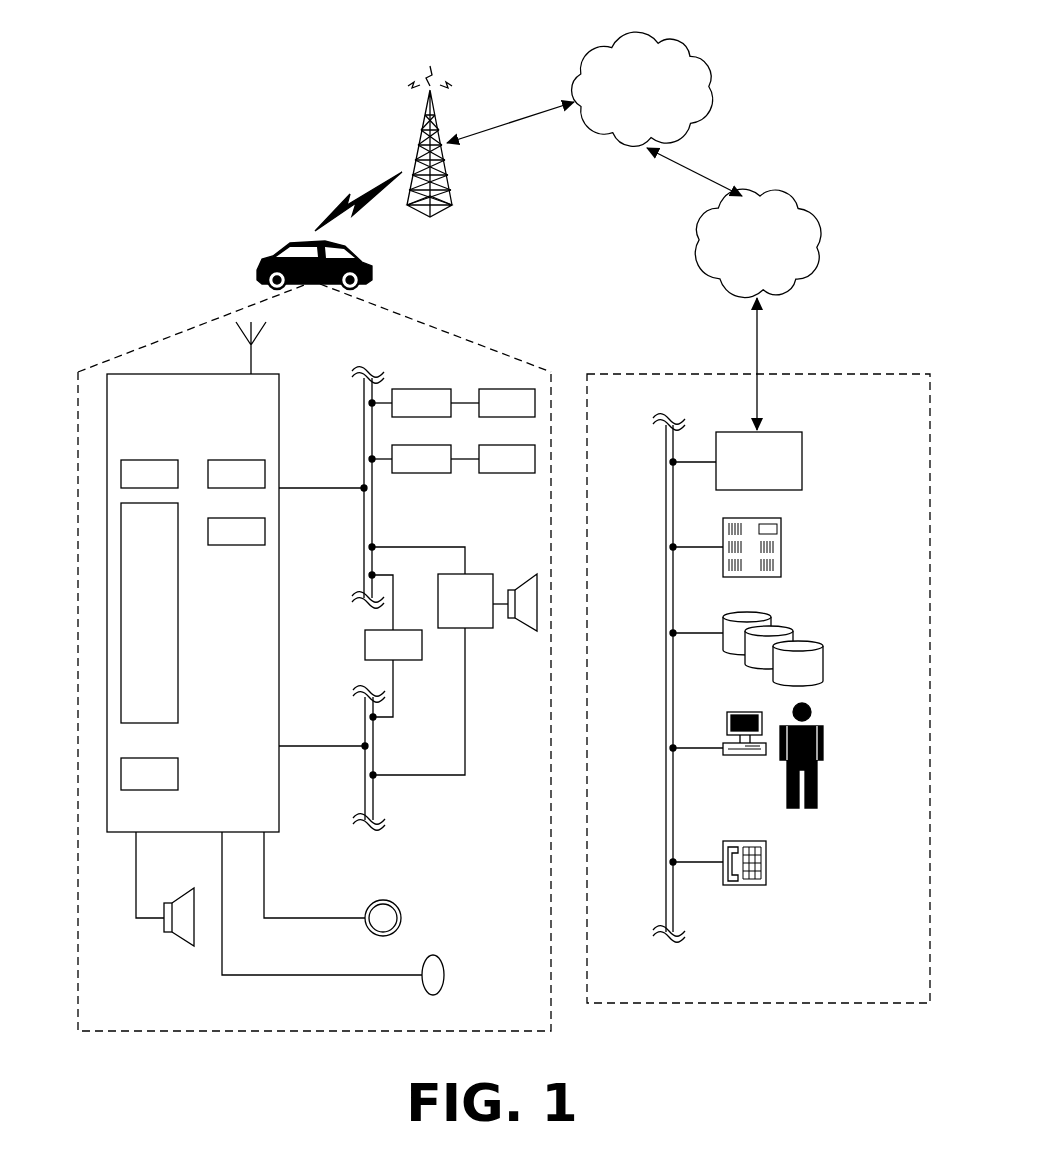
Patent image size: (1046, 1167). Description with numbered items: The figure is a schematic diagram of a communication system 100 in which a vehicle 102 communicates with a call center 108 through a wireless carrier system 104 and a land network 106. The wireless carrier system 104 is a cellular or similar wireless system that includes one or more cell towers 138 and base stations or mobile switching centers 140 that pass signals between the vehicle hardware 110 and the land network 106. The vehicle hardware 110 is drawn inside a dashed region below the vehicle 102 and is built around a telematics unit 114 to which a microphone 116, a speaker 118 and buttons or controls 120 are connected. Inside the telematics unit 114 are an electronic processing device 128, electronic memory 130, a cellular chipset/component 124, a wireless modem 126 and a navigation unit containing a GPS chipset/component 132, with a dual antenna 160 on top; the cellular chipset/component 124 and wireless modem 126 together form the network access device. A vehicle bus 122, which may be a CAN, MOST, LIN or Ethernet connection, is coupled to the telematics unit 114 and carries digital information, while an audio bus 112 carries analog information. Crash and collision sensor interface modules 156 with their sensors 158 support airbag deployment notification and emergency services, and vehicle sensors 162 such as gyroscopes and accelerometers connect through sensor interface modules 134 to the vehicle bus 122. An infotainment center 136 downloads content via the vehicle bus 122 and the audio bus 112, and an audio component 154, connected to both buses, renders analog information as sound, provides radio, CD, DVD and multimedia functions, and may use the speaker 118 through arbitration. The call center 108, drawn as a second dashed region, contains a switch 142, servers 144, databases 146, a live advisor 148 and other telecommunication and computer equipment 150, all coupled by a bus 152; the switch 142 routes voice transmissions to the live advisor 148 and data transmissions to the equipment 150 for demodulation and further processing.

The communication system 100 is at (478, 29).
The vehicle 102 is at (262, 258).
The wireless carrier system 104 is at (556, 200).
The land network 106 is at (758, 243).
The call center 108 is at (759, 1003).
The vehicle hardware 110 is at (282, 1031).
The audio bus 112 is at (365, 798).
The telematics unit 114 is at (279, 685).
The microphone 116 is at (437, 955).
The speaker 118 is at (176, 938).
The buttons and/or controls 120 is at (383, 900).
The vehicle bus 122 is at (372, 532).
The cellular chipset/component 124 is at (149, 474).
The wireless modem 126 is at (236, 474).
The electronic processing device 128 is at (149, 613).
The electronic memory 130 is at (149, 774).
The GPS chipset/component 132 is at (236, 531).
The sensor interface modules 134 is at (411, 459).
The infotainment center 136 is at (393, 646).
The cell tower 138 is at (438, 120).
The mobile switching center 140 is at (642, 89).
The switch 142 is at (737, 461).
The server 144 is at (781, 540).
The databases 146 is at (823, 650).
The live advisor 148 is at (820, 722).
The telecommunication and computer equipment 150 is at (768, 858).
The bus 152 is at (666, 685).
The audio component 154 is at (454, 661).
The crash and collision sensor interface modules 156 is at (411, 403).
The sensors 158 is at (493, 403).
The dual antenna 160 is at (251, 366).
The vehicle sensors 162 is at (493, 459).